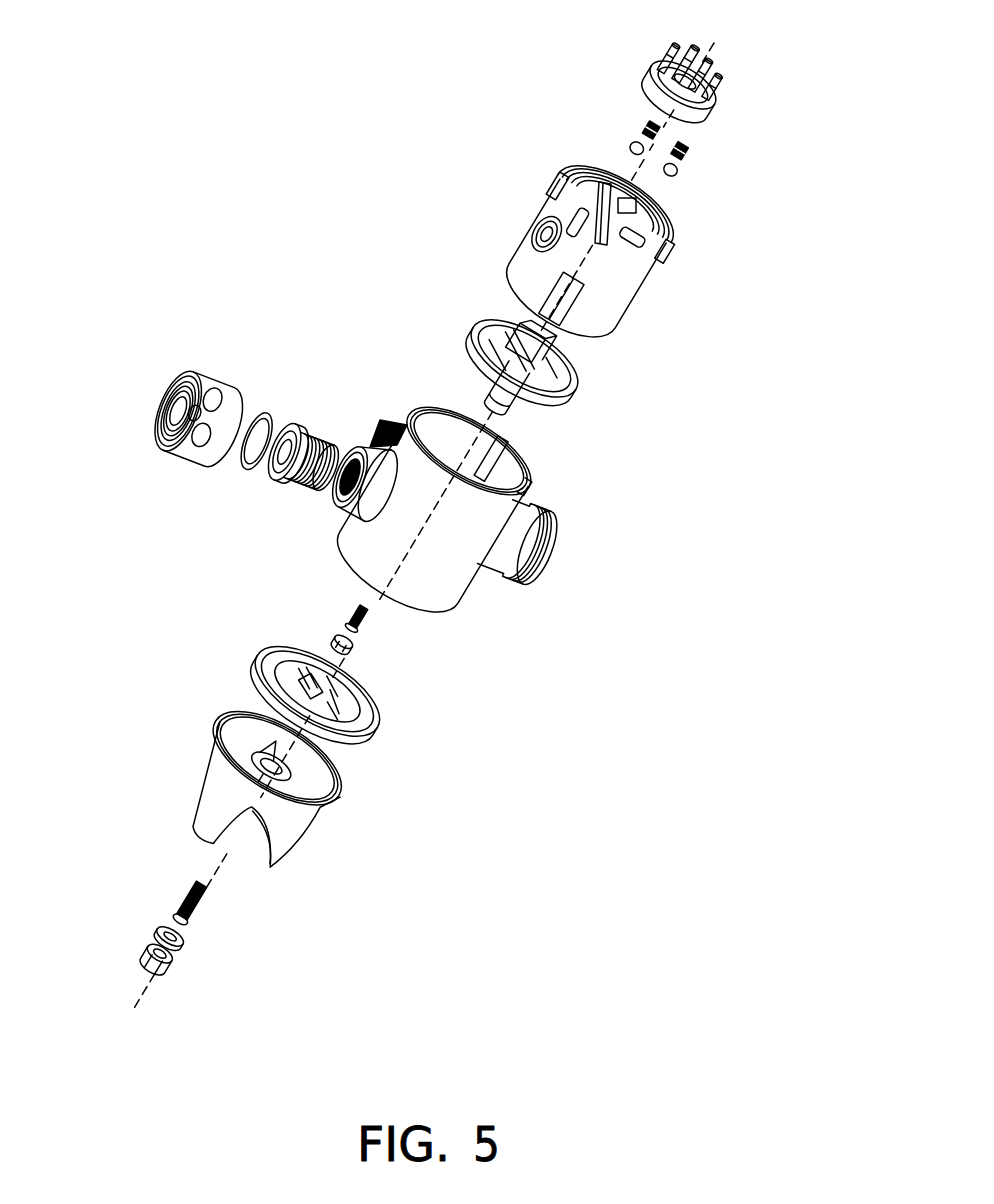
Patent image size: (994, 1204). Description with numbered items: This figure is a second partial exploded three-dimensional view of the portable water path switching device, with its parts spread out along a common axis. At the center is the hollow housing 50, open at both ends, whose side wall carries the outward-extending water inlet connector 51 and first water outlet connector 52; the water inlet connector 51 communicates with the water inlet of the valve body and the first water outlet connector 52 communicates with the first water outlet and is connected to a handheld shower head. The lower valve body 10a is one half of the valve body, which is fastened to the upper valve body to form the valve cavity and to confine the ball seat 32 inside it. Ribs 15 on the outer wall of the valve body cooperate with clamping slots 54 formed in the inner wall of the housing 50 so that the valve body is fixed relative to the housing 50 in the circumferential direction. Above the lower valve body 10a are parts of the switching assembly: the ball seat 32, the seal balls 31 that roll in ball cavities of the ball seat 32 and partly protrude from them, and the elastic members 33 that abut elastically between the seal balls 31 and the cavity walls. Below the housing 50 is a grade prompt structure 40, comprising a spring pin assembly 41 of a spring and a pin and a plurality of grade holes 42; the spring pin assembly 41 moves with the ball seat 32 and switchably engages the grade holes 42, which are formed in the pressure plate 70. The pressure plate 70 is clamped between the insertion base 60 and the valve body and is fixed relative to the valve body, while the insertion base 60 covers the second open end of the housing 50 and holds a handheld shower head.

The lower valve body 10a is at (589, 273).
The ribs 15 is at (557, 181).
The seal balls 31 is at (686, 174).
The ball seat 32 is at (703, 108).
The elastic members 33 is at (702, 153).
The grade prompt structure 40 is at (454, 668).
The spring pin assembly 41 is at (357, 650).
The grade holes 42 is at (370, 700).
The housing 50 is at (431, 510).
The water inlet connector 51 is at (200, 377).
The first water outlet connector 52 is at (550, 553).
The clamping slots 54 is at (507, 461).
The insertion base 60 is at (233, 777).
The pressure plate 70 is at (260, 672).